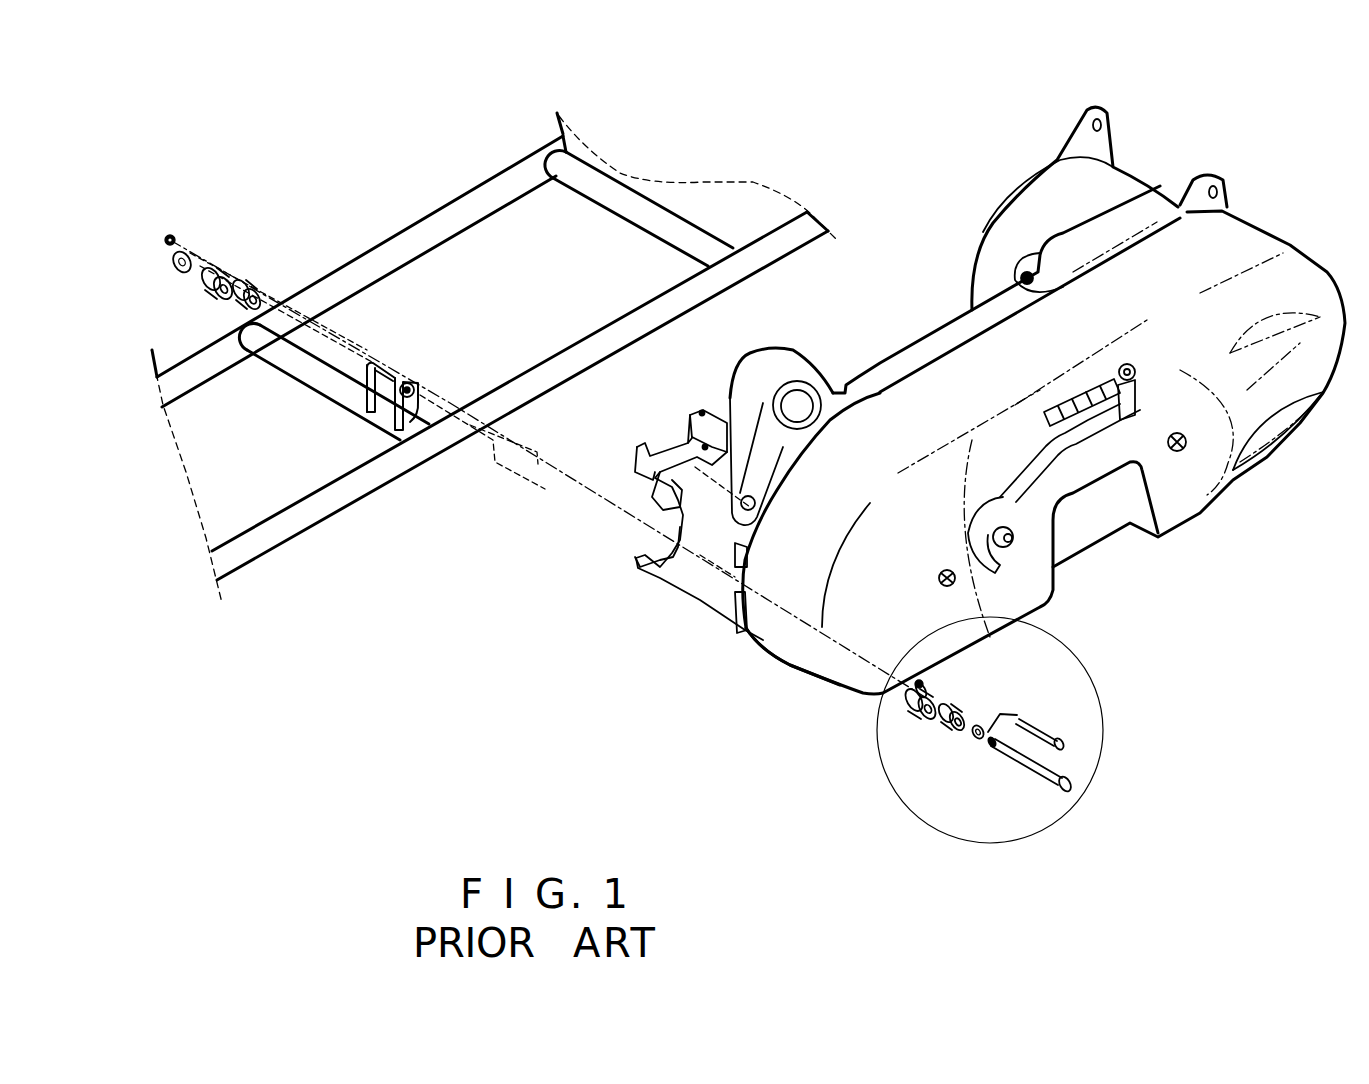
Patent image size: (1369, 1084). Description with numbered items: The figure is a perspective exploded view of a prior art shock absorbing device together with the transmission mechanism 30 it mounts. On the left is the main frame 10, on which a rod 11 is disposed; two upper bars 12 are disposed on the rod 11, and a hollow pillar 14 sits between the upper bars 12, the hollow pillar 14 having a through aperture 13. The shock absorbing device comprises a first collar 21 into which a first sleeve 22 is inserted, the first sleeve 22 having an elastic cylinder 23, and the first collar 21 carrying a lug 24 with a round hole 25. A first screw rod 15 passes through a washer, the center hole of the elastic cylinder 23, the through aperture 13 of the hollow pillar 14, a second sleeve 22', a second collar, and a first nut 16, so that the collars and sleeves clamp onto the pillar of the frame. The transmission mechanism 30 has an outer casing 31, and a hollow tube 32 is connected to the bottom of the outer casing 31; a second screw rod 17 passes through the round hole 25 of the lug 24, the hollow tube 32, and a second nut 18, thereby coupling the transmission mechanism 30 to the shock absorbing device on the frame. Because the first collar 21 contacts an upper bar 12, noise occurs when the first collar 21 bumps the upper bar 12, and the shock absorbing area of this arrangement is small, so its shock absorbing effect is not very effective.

The main frame 10 is at (455, 213).
The rod 11 is at (310, 372).
The upper bars 12 is at (383, 421).
The through aperture 13 is at (370, 360).
The hollow pillar 14 is at (396, 378).
The first screw rod 15 is at (1030, 762).
The first nut 16 is at (172, 267).
The second screw rod 17 is at (1040, 727).
The second nut 18 is at (171, 236).
The first collar 21 is at (207, 292).
The first sleeve 22 is at (935, 741).
The second sleeve 22' is at (264, 283).
The elastic cylinder 23 is at (968, 737).
The lug 24 is at (915, 681).
The round hole 25 is at (927, 683).
The transmission mechanism 30 is at (888, 340).
The outer casing 31 is at (797, 640).
The hollow tube 32 is at (693, 593).